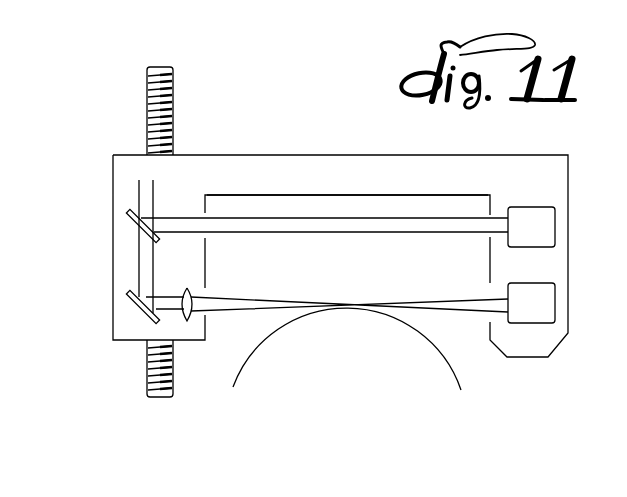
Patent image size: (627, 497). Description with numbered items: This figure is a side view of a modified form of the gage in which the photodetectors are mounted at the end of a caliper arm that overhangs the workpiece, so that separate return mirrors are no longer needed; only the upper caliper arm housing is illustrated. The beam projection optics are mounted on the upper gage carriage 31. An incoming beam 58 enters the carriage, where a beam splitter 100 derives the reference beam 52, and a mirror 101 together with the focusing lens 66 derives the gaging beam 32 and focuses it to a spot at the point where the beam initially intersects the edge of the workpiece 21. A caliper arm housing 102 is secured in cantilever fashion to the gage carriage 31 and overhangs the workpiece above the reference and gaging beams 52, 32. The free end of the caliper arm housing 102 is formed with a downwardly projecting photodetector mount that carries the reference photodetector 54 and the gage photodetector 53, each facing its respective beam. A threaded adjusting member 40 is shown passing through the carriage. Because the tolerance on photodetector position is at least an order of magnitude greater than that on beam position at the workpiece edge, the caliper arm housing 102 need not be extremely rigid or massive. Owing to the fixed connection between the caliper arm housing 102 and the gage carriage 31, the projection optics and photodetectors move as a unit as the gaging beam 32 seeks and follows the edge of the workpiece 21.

The workpiece 21 is at (462, 380).
The upper gage carriage 31 is at (120, 172).
The gaging beam 32 is at (267, 300).
The threaded adjusting rod 40 is at (173, 86).
The reference beam 52 is at (427, 232).
The gage photodetector 53 is at (535, 283).
The reference photodetector 54 is at (535, 207).
The incident light beam 58 is at (153, 193).
The focusing lens 66 is at (193, 300).
The beam splitter 100 is at (128, 224).
The mirror 101 is at (128, 302).
The caliper arm housing 102 is at (307, 156).